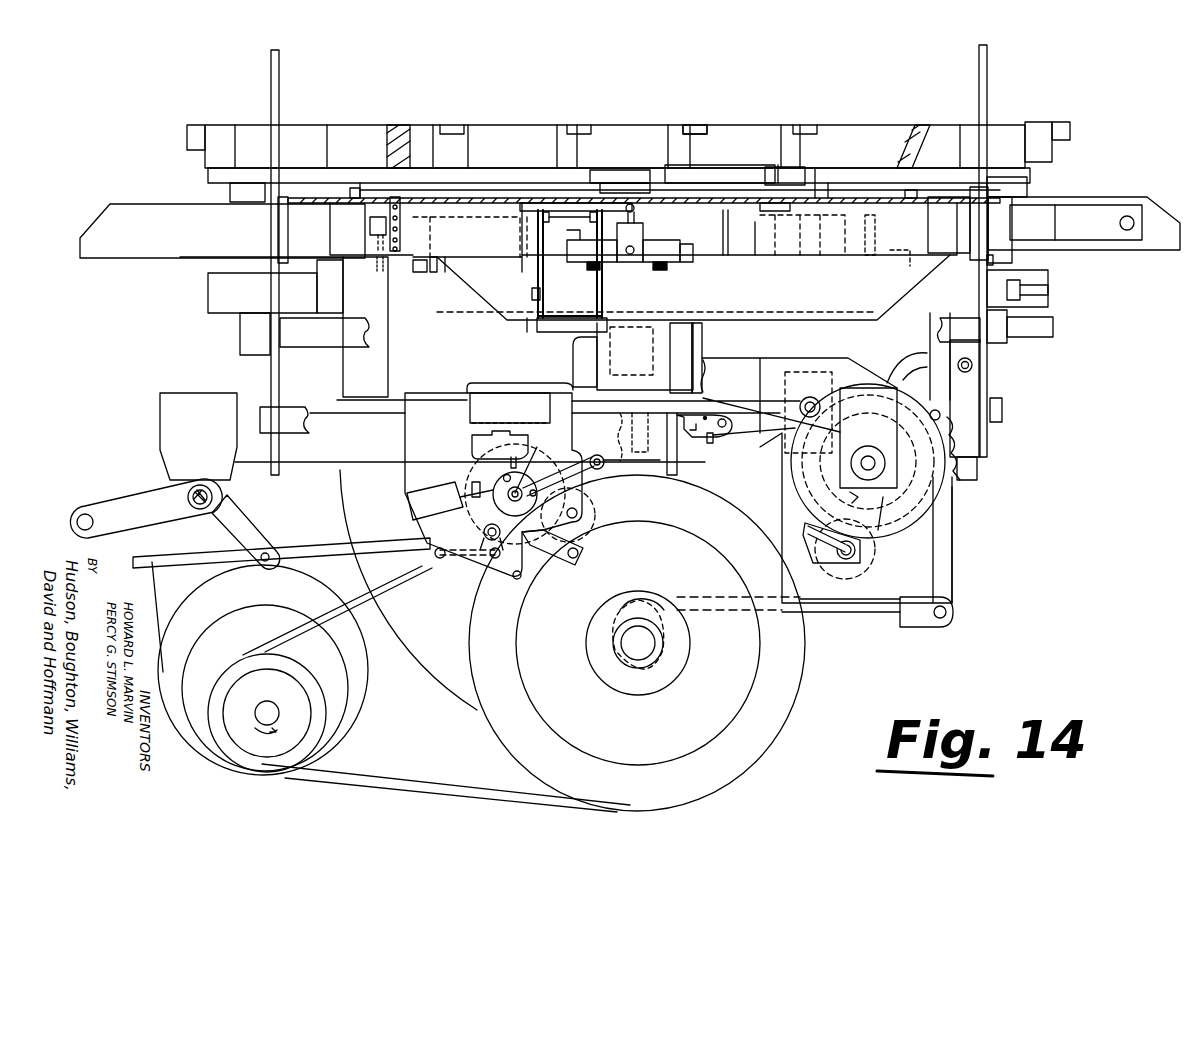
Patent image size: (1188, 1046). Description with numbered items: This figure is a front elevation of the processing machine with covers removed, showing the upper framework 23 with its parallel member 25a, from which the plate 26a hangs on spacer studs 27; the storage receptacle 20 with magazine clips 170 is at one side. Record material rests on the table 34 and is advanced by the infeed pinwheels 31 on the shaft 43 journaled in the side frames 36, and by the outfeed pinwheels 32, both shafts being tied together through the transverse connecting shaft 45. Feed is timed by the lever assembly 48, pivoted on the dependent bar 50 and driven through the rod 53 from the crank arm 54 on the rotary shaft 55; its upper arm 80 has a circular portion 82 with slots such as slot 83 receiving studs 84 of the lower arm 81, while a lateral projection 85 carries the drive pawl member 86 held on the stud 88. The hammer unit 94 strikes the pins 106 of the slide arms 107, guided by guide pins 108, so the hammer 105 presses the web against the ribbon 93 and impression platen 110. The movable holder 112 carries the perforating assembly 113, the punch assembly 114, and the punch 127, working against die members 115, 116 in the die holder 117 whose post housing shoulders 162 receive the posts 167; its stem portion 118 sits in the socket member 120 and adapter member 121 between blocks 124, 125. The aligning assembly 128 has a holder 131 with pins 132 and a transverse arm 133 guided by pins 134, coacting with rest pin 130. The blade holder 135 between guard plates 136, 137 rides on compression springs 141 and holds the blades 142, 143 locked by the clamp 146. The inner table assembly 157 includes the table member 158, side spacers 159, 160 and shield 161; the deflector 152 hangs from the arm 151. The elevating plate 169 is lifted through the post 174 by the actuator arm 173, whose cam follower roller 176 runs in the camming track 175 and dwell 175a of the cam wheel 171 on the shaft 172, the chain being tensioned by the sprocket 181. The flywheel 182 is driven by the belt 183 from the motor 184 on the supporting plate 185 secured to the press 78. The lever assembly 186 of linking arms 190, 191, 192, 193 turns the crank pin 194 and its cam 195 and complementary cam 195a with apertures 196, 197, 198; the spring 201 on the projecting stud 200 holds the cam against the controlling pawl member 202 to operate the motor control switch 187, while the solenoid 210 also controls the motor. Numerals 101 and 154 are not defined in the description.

The storage receptacle 20 is at (410, 124).
The upper framework 23 is at (121, 275).
The parallel member 25a is at (80, 250).
The plate 26a is at (336, 398).
The spacer studs 27 is at (343, 353).
The infeed pinwheels 31 is at (388, 210).
The outfeed pinwheels 32 is at (866, 233).
The table 34 is at (958, 187).
The side frames 36 is at (280, 62).
The shaft 43 is at (370, 224).
The transverse connecting shaft 45 is at (1133, 230).
The lever assembly 48 is at (920, 328).
The dependent bar 50 is at (977, 474).
The rod 53 is at (844, 612).
The crank arm 54 is at (605, 605).
The rotary shaft 55 is at (643, 654).
The press 78 is at (412, 668).
The upper arm 80 is at (930, 336).
The lower arm 81 is at (953, 587).
The circular portion 82 is at (957, 482).
The slot 83 is at (977, 458).
The studs 84 is at (935, 410).
The lateral projection 85 is at (877, 393).
The drive pawl member 86 is at (975, 355).
The stud 88 is at (988, 366).
The ribbon 93 is at (778, 165).
The hammer unit 94 is at (610, 304).
The rod 101 is at (1053, 326).
The hammer 105 is at (526, 188).
The pins 106 is at (545, 280).
The slide arms 107 is at (530, 320).
The guide pins 108 is at (534, 300).
The impression platen 110 is at (733, 175).
The movable holder 112 is at (1048, 290).
The perforating assembly 113 is at (712, 269).
The punch assembly 114 is at (847, 262).
The die member 115 is at (626, 172).
The die member 116 is at (370, 173).
The die holder 117 is at (342, 125).
The stem portion 118 is at (605, 331).
The socket member 120 is at (664, 378).
The adapter member 121 is at (668, 473).
The block 124 is at (780, 495).
The block 125 is at (764, 358).
The punch 127 is at (783, 262).
The aligning assembly 128 is at (413, 274).
The rest pin 130 is at (434, 242).
The holder 131 is at (391, 267).
The pins 132 is at (378, 243).
The transverse arm 133 is at (445, 275).
The pins 134 is at (420, 275).
The perforating blade holder 135 is at (676, 243).
The guard plate 136 is at (578, 262).
The guard plate 137 is at (689, 264).
The compression springs 141 is at (663, 270).
The perforating blade 142 is at (634, 208).
The perforating blade 143 is at (636, 218).
The clamp 146 is at (625, 262).
The arm 151 is at (790, 212).
The deflector 152 is at (818, 180).
The housing 154 is at (915, 266).
The inner table assembly 157 is at (862, 164).
The table member 158 is at (800, 219).
The side spacer 159 is at (917, 192).
The side spacer 160 is at (350, 194).
The shield 161 is at (833, 183).
The post housing shoulders 162 is at (1027, 176).
The posts 167 is at (994, 259).
The elevating plate 169 is at (752, 259).
The magazine clips 170 is at (690, 125).
The cam wheel 171 is at (901, 530).
The shaft 172 is at (868, 455).
The actuator arm 173 is at (744, 438).
The post 174 is at (680, 440).
The camming track 175 is at (898, 516).
The dwell 175a is at (870, 495).
The cam follower roller 176 is at (841, 400).
The sprocket 181 is at (856, 568).
The flywheel 182 is at (800, 685).
The belt 183 is at (418, 780).
The motor 184 is at (354, 695).
The supporting plate 185 is at (284, 543).
The lever assembly 186 is at (268, 520).
The motor control switch 187 is at (472, 440).
The linking arm 190 is at (154, 507).
The linking arm 191 is at (232, 512).
The linking arm 192 is at (322, 545).
The linking arm 193 is at (583, 558).
The crank pin 194 is at (545, 464).
The cam 195 is at (547, 488).
The complementary cam 195a is at (527, 470).
The apertures 196 is at (497, 486).
The apertures 197 is at (472, 482).
The apertures 198 is at (512, 515).
The projecting stud 200 is at (566, 516).
The spring 201 is at (585, 488).
The controlling pawl member 202 is at (483, 537).
The solenoid 210 is at (412, 510).